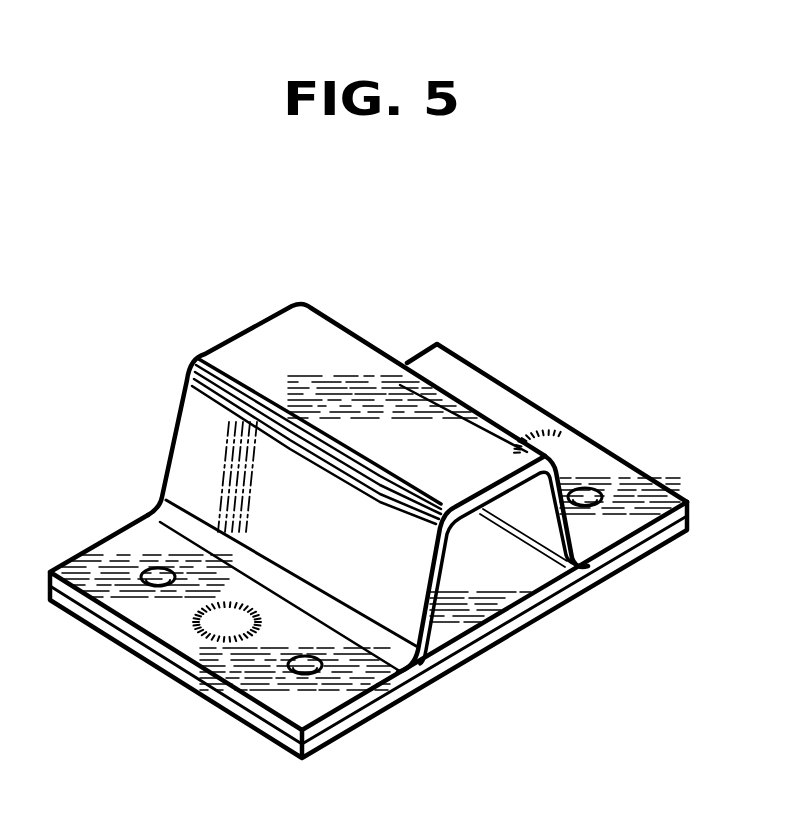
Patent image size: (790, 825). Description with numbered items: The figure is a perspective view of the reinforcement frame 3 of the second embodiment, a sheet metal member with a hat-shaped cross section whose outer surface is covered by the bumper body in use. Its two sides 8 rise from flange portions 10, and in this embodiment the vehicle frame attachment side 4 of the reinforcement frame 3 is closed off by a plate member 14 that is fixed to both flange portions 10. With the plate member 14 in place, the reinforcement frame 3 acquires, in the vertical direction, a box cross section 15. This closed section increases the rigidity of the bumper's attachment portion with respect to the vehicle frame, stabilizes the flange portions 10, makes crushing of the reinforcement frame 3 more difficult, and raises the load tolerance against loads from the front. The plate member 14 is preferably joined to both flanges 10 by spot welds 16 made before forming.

The reinforcement frame 3 is at (472, 350).
The vehicle frame attachment side 4 is at (463, 676).
The sides 8 is at (203, 444).
The flange portions 10 is at (587, 460).
The plate member 14 is at (466, 623).
The box cross section 15 is at (522, 603).
The spot welds 16 is at (533, 437).